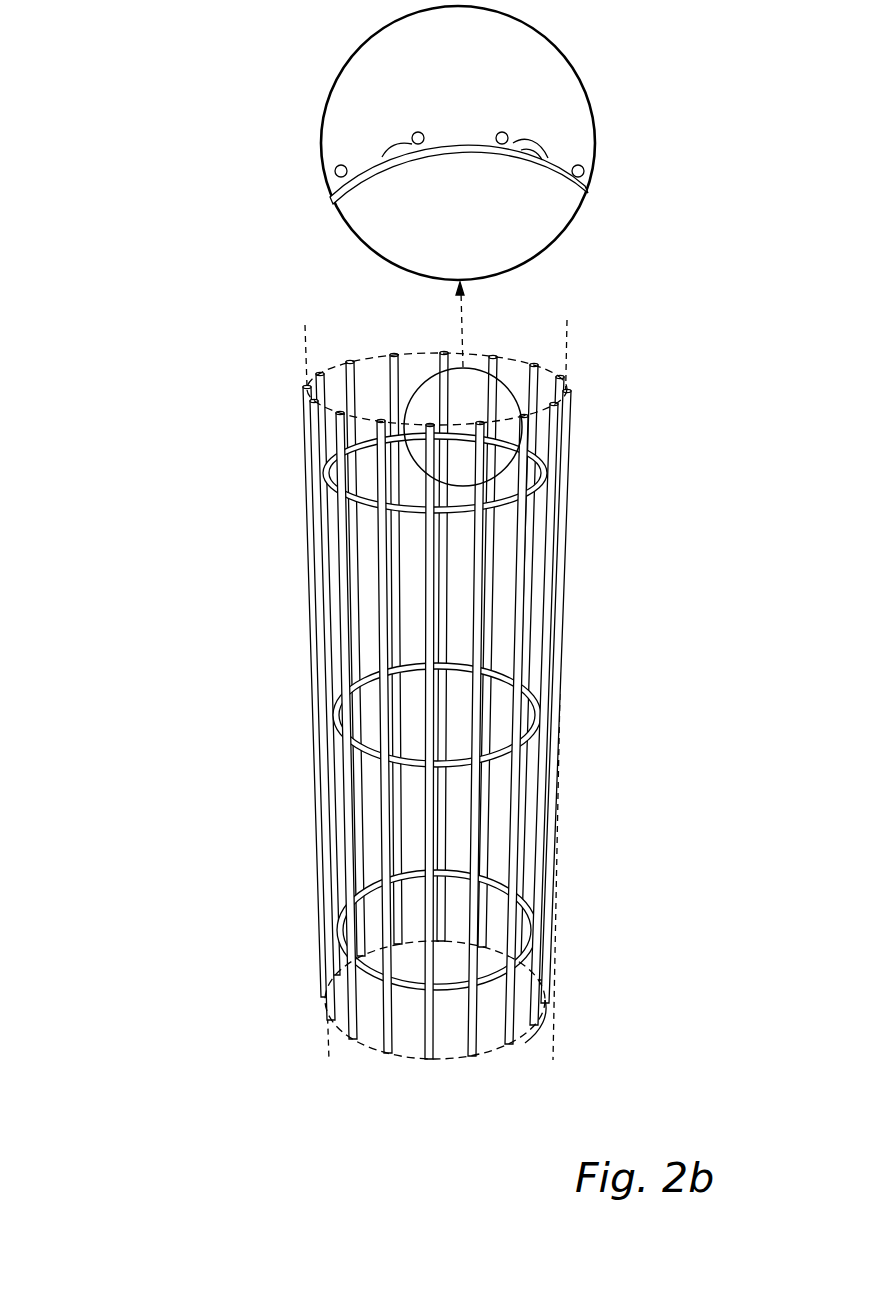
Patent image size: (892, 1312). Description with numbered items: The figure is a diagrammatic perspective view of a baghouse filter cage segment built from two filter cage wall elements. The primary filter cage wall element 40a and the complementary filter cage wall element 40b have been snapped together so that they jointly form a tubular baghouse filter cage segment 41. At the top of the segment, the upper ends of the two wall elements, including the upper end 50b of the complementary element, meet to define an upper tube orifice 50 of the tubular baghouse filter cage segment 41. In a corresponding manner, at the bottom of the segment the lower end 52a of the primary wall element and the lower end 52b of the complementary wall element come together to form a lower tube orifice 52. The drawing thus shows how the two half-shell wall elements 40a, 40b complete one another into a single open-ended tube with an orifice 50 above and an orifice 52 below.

The tubular baghouse filter cage segment 41 is at (425, 579).
The primary filter cage wall element 40a is at (235, 418).
The complementary filter cage wall element 40b is at (635, 570).
The upper tube orifice 50 is at (376, 311).
The upper end of complementary filter cage wall element 50b is at (370, 347).
The lower tube orifice 52 is at (458, 1078).
The lower end of primary filter cage wall element 52a is at (378, 1075).
The lower end of complementary filter cage wall element 52b is at (510, 1062).